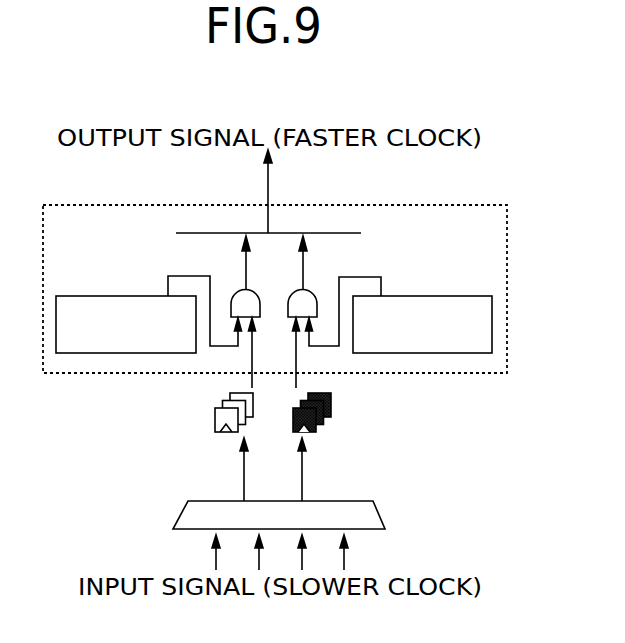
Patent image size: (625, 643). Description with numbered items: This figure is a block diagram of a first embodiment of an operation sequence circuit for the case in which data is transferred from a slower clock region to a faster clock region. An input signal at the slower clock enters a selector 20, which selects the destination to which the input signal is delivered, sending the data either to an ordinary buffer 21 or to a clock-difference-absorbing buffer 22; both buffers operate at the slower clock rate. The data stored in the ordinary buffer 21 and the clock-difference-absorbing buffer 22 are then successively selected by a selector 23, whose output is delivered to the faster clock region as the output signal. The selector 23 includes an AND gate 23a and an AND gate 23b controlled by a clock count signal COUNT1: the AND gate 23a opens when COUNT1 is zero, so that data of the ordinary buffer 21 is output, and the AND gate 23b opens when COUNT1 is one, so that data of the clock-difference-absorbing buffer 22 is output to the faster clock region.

The selector 20 is at (381, 513).
The buffer 21 is at (210, 418).
The clock-difference-absorbing buffer 22 is at (338, 418).
The selector 23 is at (453, 206).
The AND gate 23a is at (238, 292).
The AND gate 23b is at (310, 291).